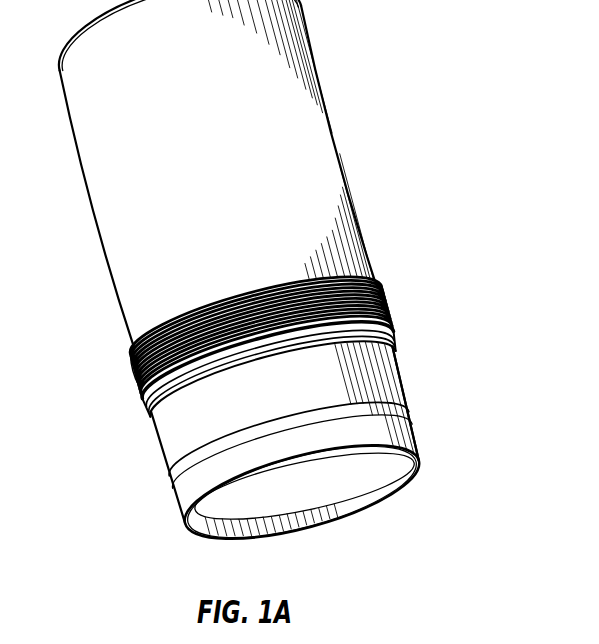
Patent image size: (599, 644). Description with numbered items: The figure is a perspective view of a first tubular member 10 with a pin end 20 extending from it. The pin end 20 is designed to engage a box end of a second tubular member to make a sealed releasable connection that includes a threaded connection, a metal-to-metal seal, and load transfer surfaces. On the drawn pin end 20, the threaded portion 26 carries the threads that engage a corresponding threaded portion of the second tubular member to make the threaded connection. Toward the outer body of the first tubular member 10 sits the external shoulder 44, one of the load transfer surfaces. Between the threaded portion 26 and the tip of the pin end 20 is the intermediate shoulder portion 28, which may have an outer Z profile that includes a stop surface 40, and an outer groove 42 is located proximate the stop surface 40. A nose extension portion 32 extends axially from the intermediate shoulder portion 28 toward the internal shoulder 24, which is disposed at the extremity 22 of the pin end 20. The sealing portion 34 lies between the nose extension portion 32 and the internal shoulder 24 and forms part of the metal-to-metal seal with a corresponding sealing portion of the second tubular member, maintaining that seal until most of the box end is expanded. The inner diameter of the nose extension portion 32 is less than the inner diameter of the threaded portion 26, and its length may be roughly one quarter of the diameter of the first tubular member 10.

The first tubular member 10 is at (336, 72).
The pin end 20 is at (452, 397).
The extremity 22 is at (408, 493).
The internal shoulder 24 is at (421, 462).
The threaded portion 26 is at (393, 324).
The intermediate shoulder portion 28 is at (398, 351).
The nose extension portion 32 is at (178, 432).
The sealing portion 34 is at (197, 493).
The stop surface 40 is at (182, 384).
The outer groove 42 is at (394, 341).
The external shoulder 44 is at (143, 352).